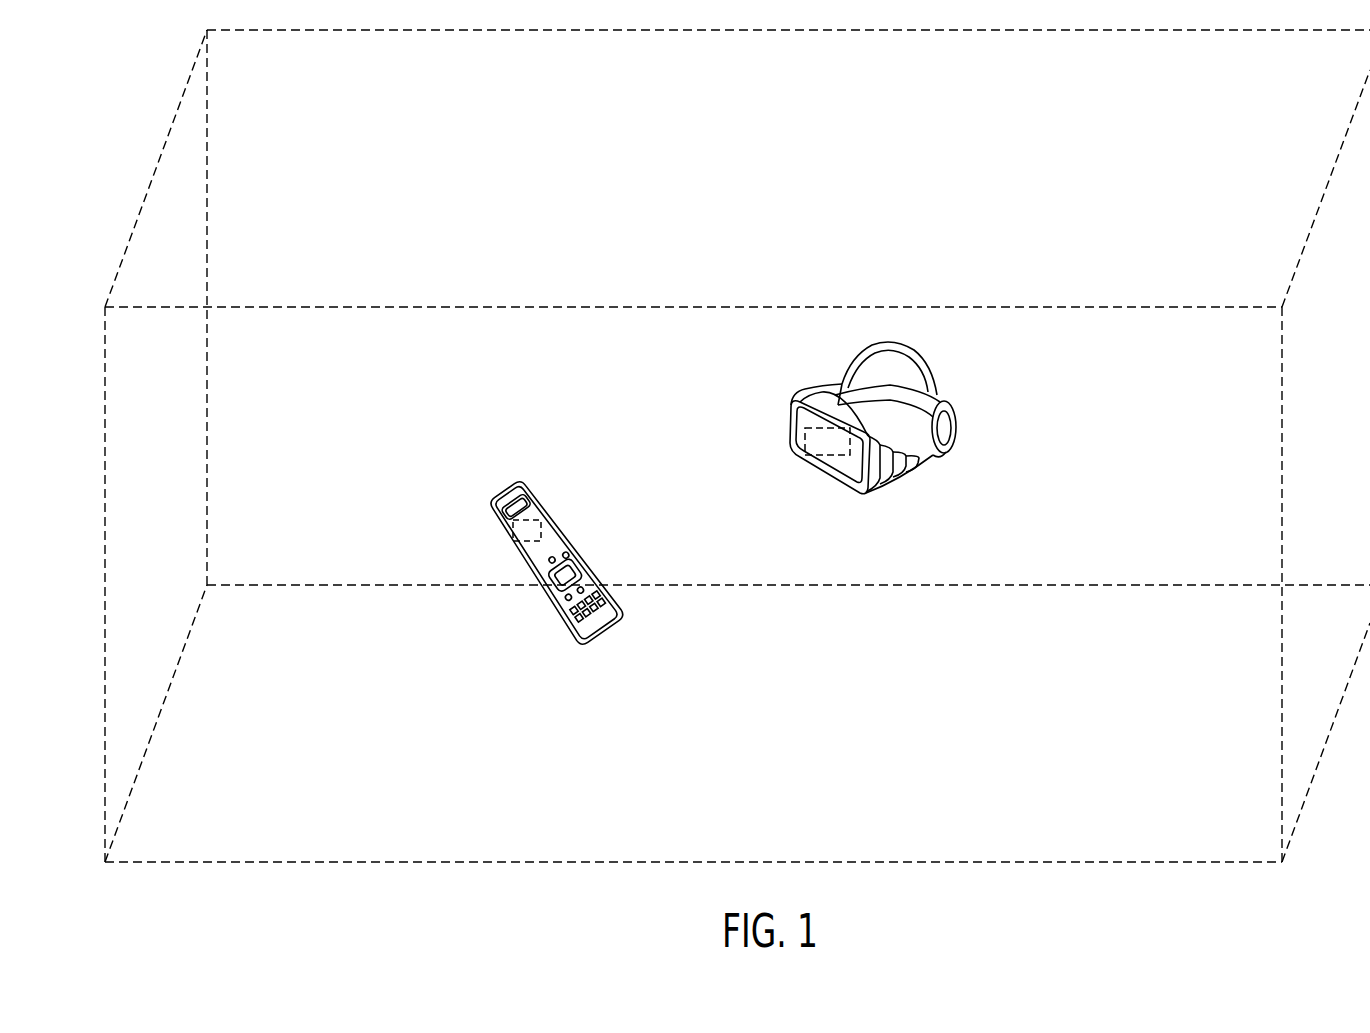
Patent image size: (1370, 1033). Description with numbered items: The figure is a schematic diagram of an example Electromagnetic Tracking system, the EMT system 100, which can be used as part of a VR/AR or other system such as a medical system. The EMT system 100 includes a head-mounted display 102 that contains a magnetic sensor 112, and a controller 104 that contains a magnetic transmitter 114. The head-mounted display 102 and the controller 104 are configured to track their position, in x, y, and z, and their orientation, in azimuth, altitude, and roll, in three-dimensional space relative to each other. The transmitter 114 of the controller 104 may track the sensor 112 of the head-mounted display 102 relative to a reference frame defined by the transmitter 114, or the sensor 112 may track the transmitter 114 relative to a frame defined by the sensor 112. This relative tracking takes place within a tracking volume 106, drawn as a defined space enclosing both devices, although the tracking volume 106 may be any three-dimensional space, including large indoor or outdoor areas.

The EMT system 100 is at (113, 110).
The head-mounted display 102 is at (952, 412).
The controller 104 is at (485, 498).
The tracking volume 106 is at (135, 227).
The magnetic sensor 112 is at (805, 440).
The magnetic transmitter 114 is at (542, 530).